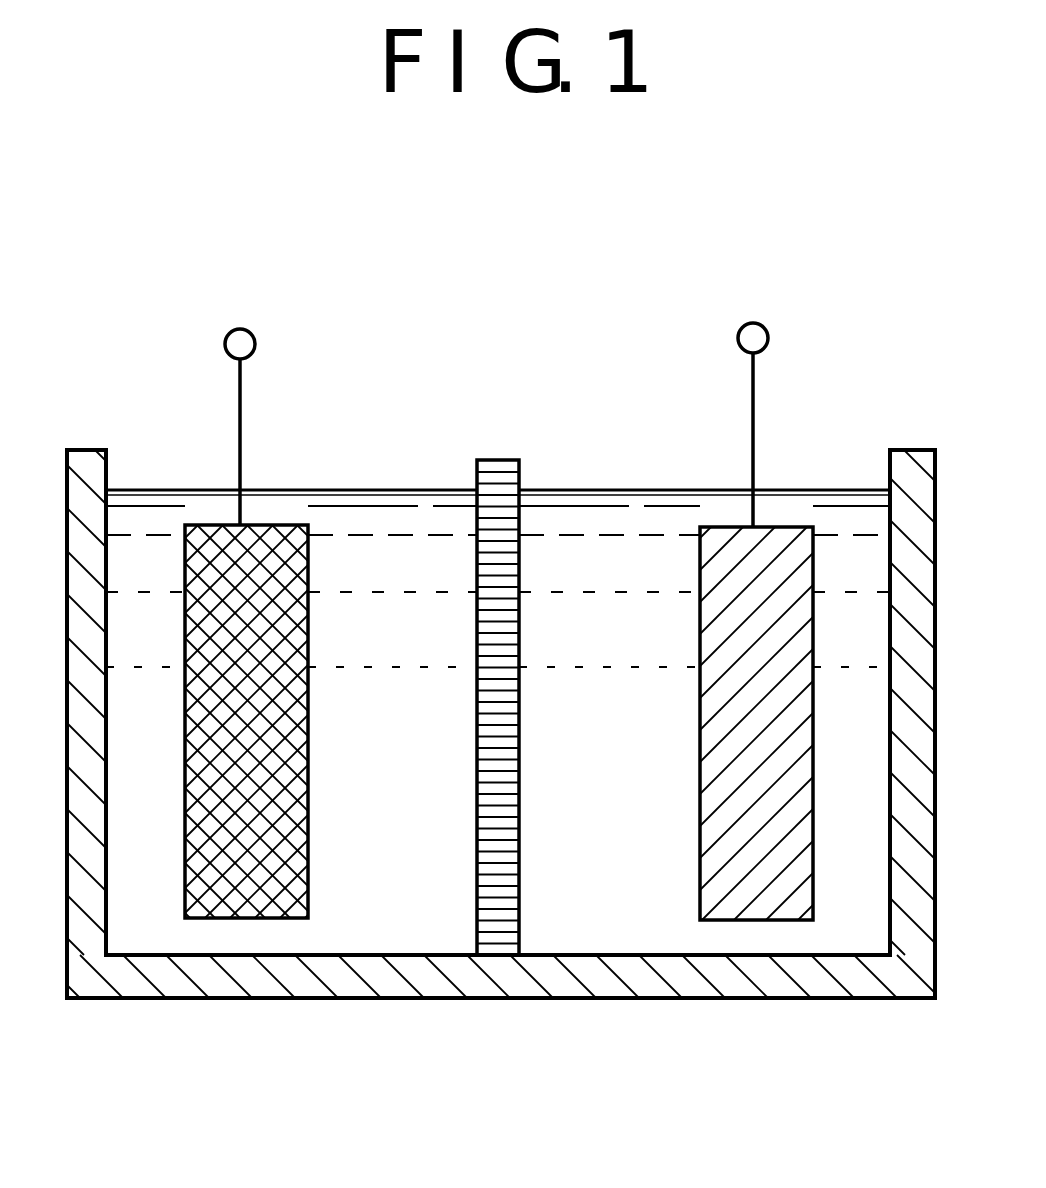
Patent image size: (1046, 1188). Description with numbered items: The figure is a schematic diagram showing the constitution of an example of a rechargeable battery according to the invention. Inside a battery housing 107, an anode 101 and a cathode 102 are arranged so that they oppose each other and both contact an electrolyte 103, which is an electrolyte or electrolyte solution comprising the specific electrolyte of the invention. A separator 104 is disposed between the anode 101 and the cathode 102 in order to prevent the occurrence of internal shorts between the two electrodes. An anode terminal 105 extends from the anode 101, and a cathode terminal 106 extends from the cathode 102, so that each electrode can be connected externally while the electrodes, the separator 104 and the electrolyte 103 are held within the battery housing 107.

The anode 101 is at (248, 897).
The cathode 102 is at (760, 888).
The electrolyte 103 is at (584, 920).
The separator 104 is at (498, 450).
The anode terminal 105 is at (247, 330).
The cathode terminal 106 is at (748, 324).
The battery housing 107 is at (127, 983).